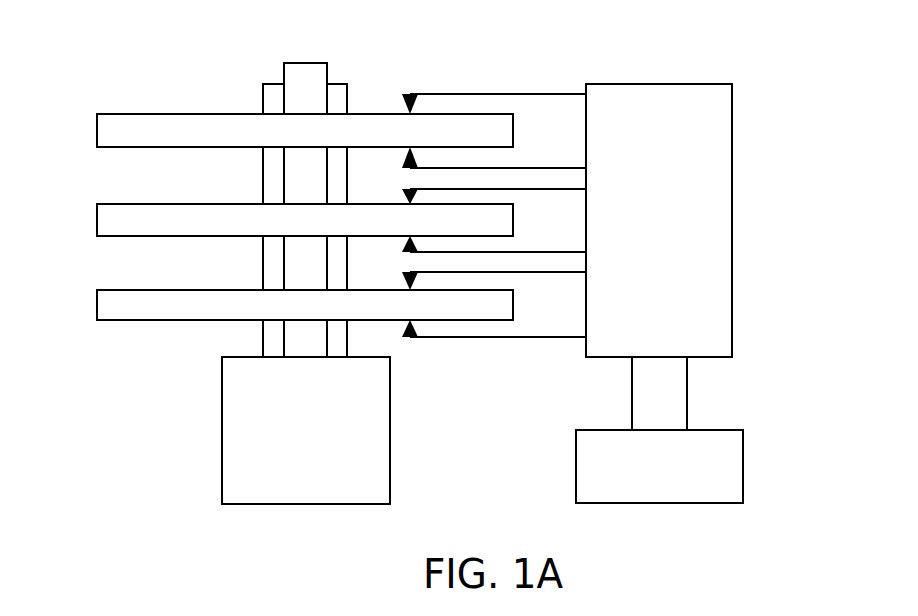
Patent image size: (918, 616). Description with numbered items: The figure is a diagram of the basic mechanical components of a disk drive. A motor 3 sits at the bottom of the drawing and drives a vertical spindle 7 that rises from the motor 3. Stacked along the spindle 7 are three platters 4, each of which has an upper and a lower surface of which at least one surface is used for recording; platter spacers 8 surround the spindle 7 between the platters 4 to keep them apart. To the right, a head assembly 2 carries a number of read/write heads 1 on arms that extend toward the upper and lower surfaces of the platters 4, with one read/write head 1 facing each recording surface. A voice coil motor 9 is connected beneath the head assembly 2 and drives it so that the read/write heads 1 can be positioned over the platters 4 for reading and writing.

The read/write heads 1 is at (407, 92).
The head assembly 2 is at (722, 84).
The motor 3 is at (390, 440).
The platters 4 is at (97, 131).
The spindle 7 is at (303, 63).
The platter spacers 8 is at (263, 335).
The voice coil motor 9 is at (698, 430).